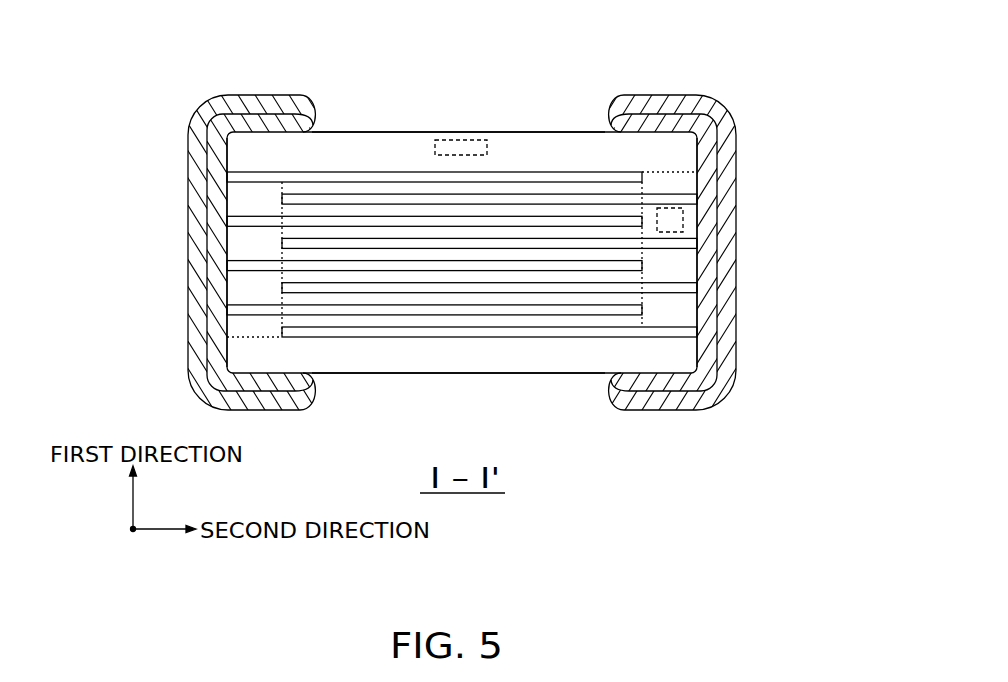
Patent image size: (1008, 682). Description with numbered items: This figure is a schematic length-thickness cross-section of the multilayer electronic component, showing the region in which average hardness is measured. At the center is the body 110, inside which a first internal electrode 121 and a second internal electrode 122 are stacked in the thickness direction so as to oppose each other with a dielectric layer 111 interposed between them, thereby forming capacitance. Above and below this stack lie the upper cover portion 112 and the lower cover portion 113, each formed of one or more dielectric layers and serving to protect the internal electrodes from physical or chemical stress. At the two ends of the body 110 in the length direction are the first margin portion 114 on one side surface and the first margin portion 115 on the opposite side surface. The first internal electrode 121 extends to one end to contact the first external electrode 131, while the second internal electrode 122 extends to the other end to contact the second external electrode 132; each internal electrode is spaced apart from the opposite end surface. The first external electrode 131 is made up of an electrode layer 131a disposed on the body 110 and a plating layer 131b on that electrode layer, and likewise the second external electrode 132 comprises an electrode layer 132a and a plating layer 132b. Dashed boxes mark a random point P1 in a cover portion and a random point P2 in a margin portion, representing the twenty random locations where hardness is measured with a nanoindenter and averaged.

The body 110 is at (395, 132).
The dielectric layer 111 is at (347, 210).
The upper cover portion 112 is at (425, 150).
The lower cover portion 113 is at (465, 355).
The first margin portion 114 is at (223, 275).
The first margin portion 115 is at (705, 265).
The first internal electrode 121 is at (530, 173).
The second internal electrode 122 is at (588, 193).
The first external electrode 131 is at (100, 172).
The electrode layer 131a is at (207, 183).
The plating layer 131b is at (190, 210).
The second external electrode 132 is at (825, 147).
The electrode layer 132a is at (707, 160).
The plating layer 132b is at (722, 185).
The random point P1 is at (475, 140).
The random point P2 is at (683, 220).